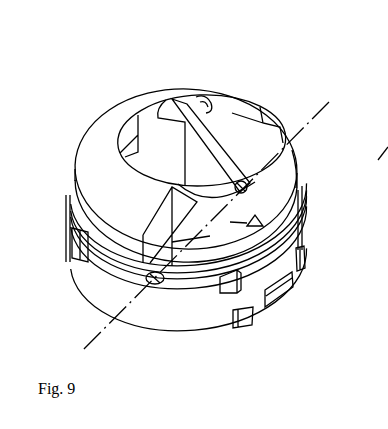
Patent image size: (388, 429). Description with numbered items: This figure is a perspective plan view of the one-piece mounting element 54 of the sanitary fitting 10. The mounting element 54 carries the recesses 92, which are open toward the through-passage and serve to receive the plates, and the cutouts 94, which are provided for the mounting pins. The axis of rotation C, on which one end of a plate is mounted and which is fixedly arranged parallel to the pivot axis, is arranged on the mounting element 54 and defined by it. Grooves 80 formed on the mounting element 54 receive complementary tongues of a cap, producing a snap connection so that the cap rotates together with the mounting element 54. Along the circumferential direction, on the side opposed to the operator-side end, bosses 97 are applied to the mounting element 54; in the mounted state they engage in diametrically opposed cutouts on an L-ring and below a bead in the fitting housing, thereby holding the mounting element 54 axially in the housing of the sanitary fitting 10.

The mounting element 54 is at (126, 77).
The grooves 80 is at (95, 264).
The recesses 92 is at (227, 153).
The cutouts 94 is at (165, 285).
The bosses 97 is at (300, 262).
The axis of rotation C is at (319, 108).
The sanitary fitting 10 is at (379, 115).